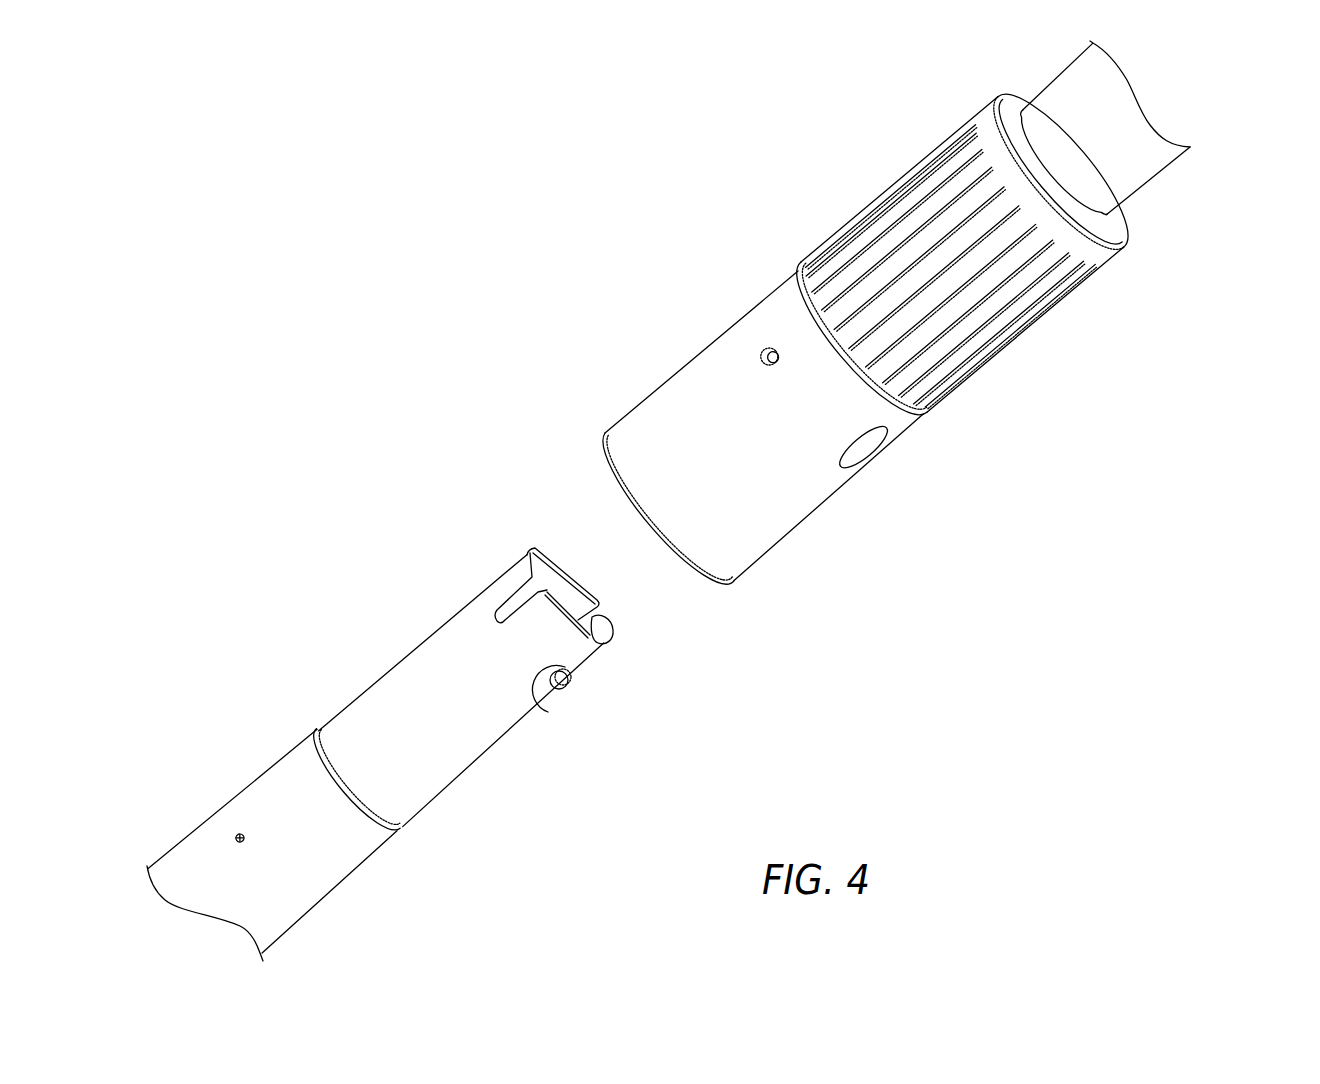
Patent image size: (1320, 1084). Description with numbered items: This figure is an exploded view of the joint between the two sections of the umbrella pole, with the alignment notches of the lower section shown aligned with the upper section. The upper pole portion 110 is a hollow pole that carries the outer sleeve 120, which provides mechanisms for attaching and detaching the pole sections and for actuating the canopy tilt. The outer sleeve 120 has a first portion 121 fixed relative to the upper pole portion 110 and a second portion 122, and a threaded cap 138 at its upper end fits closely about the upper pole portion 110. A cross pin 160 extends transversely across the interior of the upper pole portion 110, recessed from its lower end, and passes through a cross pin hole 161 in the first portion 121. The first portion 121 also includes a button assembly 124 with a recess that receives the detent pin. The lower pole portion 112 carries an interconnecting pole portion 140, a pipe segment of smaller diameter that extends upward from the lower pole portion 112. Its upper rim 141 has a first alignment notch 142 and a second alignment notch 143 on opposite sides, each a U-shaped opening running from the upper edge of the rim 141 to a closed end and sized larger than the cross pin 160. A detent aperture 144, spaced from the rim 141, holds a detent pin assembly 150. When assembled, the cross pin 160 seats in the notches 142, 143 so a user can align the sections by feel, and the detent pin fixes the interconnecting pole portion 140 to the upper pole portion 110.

The upper pole portion 110 is at (1137, 167).
The cap 138 is at (1108, 222).
The second portion 122 is at (998, 328).
The button assembly 124 is at (871, 453).
The first portion 121 is at (780, 523).
The outer sleeve 120 is at (917, 318).
The cross pin 160 is at (679, 332).
The cross pin hole 161 is at (768, 347).
The second alignment notch 143 is at (607, 607).
The first alignment notch 142 is at (508, 608).
The upper rim 141 is at (613, 632).
The detent pin assembly 150 is at (578, 678).
The detent aperture 144 is at (548, 712).
The interconnecting pole portion 140 is at (497, 728).
The lower pole portion 112 is at (332, 878).